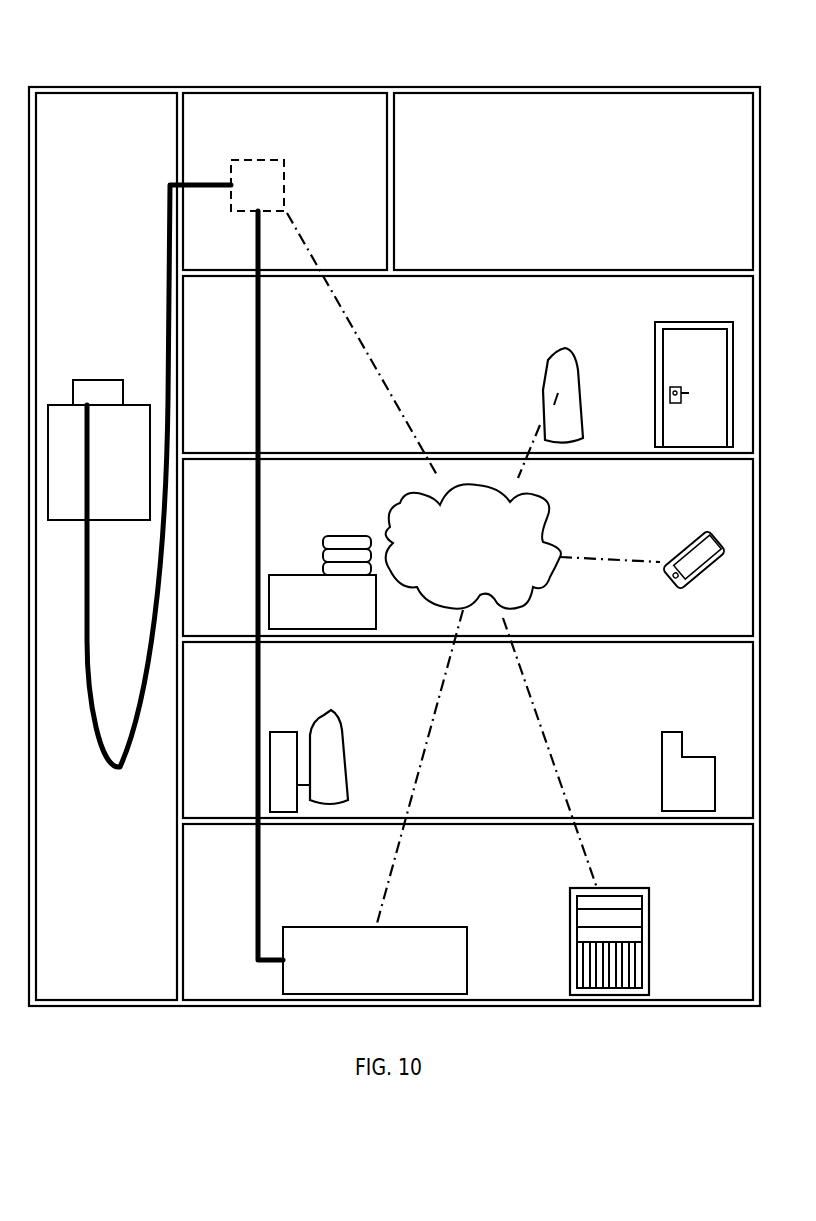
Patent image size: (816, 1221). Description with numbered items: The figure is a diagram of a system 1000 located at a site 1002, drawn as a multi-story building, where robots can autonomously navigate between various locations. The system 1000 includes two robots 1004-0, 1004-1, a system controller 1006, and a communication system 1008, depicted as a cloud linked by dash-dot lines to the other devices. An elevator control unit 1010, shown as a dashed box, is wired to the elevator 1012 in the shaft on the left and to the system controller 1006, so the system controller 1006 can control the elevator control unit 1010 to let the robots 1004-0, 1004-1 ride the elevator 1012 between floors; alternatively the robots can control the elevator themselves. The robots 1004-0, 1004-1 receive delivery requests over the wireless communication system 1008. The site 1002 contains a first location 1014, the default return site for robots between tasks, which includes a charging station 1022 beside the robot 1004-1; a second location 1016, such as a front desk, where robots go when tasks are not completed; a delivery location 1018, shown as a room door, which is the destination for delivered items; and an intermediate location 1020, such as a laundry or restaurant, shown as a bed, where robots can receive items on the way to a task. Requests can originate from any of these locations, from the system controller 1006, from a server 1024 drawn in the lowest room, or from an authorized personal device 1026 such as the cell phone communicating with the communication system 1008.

The system 1000 is at (650, 55).
The site 1002 is at (614, 1005).
The robot 1004-0 is at (557, 380).
The robot 1004-1 is at (326, 727).
The system controller 1006 is at (375, 960).
The communication system 1008 is at (473, 546).
The elevator control unit 1010 is at (245, 162).
The elevator 1012 is at (67, 507).
The first location 1014 is at (355, 730).
The second location 1016 is at (642, 733).
The delivery location 1018 is at (635, 352).
The intermediate location 1020 is at (341, 524).
The charging station 1022 is at (283, 765).
The server 1024 is at (649, 926).
The authorized personal device 1026 is at (700, 577).